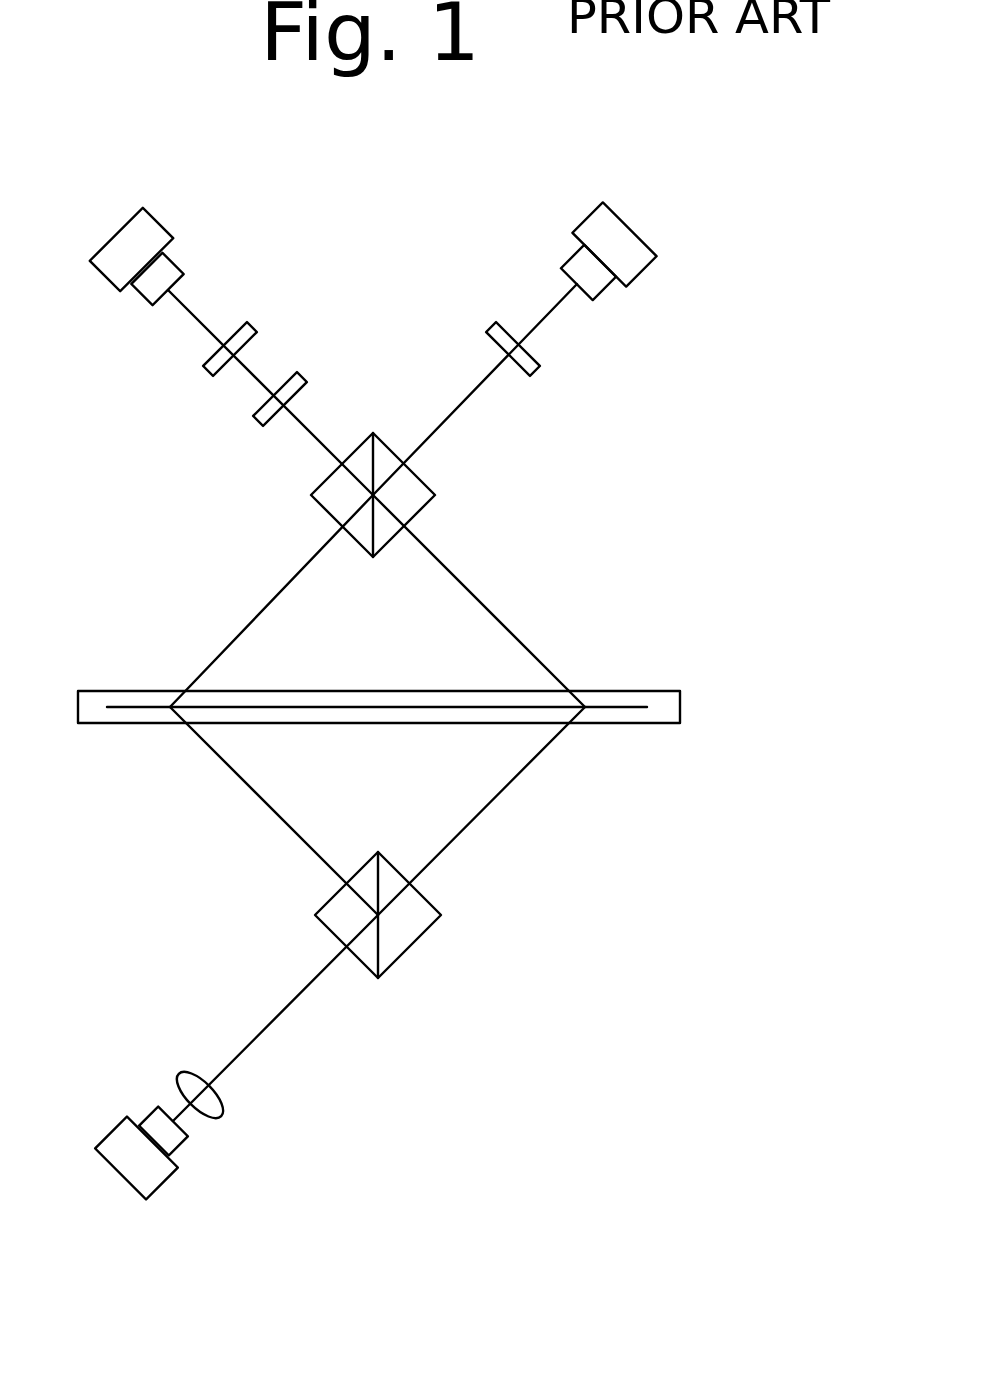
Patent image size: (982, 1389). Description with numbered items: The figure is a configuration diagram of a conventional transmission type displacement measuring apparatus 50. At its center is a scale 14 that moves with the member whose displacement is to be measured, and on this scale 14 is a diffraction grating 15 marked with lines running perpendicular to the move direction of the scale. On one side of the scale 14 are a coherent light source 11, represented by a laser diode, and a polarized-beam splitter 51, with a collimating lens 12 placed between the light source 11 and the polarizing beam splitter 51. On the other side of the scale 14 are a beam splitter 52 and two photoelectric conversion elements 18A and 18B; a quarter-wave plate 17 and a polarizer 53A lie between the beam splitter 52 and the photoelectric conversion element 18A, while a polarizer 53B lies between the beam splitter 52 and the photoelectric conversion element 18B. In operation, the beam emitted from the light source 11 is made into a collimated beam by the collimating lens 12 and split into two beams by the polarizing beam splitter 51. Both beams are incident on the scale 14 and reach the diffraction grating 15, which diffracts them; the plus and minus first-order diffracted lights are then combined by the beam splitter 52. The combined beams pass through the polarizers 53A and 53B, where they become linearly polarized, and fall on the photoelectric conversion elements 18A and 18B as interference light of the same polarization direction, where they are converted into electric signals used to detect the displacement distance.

The coherent light source 11 is at (170, 1182).
The collimating lens 12 is at (223, 1098).
The scale 14 is at (635, 723).
The diffraction grating 15 is at (613, 703).
The quarter-wave plate 17 is at (257, 422).
The photoelectric conversion element 18A is at (163, 218).
The photoelectric conversion element 18B is at (637, 232).
The transmission type displacement measuring apparatus 50 is at (570, 1043).
The polarized-beam splitter 51 is at (423, 933).
The beam splitter 52 is at (383, 433).
The polarizer 53A is at (203, 364).
The polarizer 53B is at (530, 347).